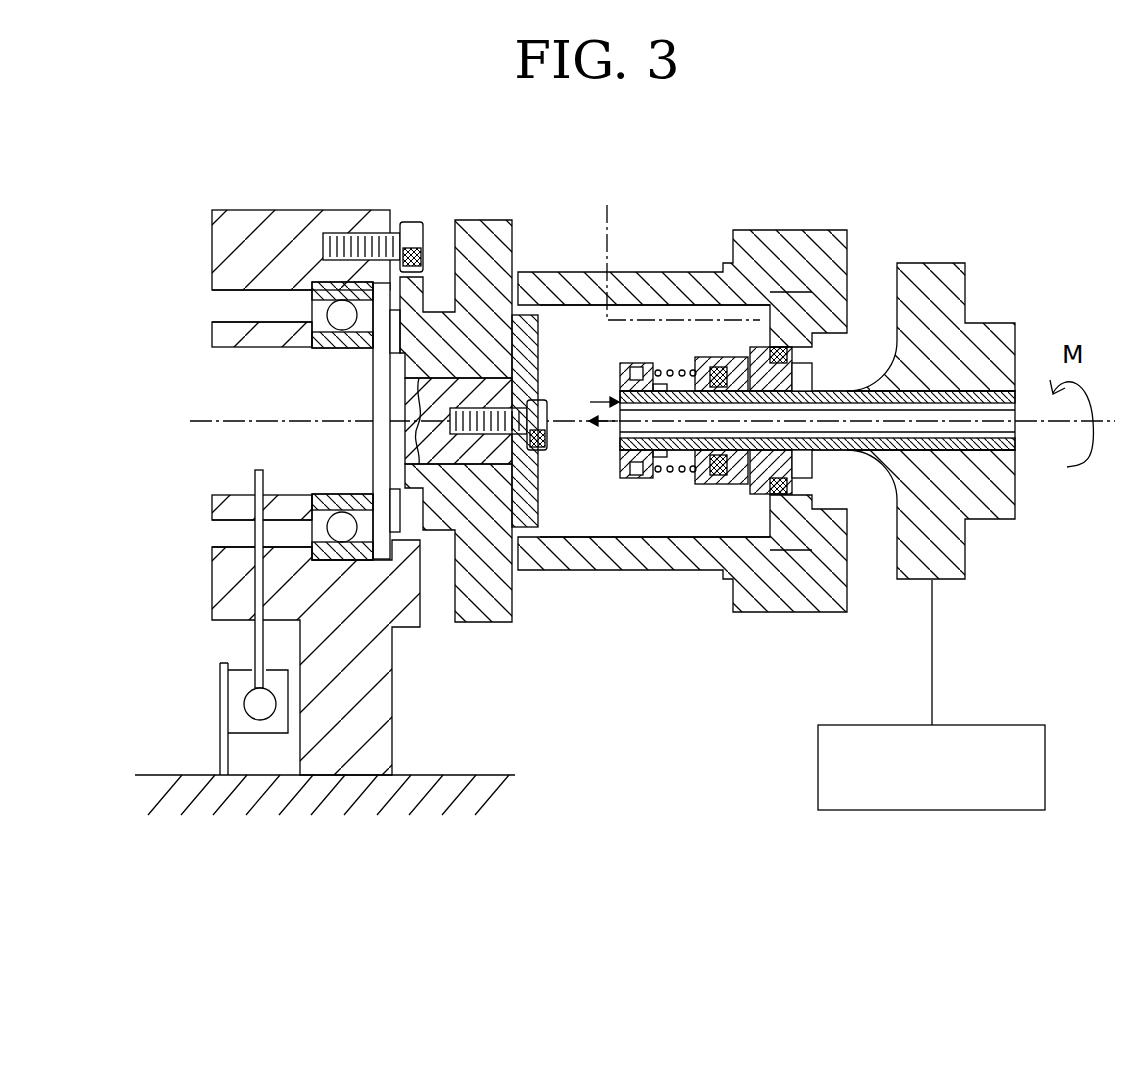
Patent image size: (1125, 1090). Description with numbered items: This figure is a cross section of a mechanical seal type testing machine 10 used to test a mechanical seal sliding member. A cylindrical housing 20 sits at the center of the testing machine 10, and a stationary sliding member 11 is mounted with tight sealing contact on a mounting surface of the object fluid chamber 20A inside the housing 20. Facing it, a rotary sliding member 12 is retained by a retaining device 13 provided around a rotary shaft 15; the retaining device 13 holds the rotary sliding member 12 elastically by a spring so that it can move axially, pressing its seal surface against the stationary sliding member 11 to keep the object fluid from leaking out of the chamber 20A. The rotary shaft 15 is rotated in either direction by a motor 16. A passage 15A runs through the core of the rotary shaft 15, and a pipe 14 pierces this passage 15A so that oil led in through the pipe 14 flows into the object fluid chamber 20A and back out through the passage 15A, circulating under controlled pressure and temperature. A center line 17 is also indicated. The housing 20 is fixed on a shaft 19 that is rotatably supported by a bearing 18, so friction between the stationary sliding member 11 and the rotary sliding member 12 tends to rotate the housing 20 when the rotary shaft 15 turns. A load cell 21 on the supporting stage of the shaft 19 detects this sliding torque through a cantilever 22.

The testing machine 10 is at (838, 197).
The stationary sliding member 11 is at (770, 347).
The rotary sliding member 12 is at (737, 365).
The retaining device 13 is at (680, 365).
The pipe 14 is at (963, 500).
The rotary shaft 15 is at (935, 292).
The passage 15A is at (983, 395).
The motor 16 is at (1045, 763).
The axis 17 is at (614, 212).
The bearing 18 is at (335, 317).
The shaft 19 is at (238, 390).
The cylindrical housing 20 is at (600, 550).
The object fluid chamber 20A is at (673, 510).
The load cell 21 is at (245, 699).
The cantilever 22 is at (253, 640).